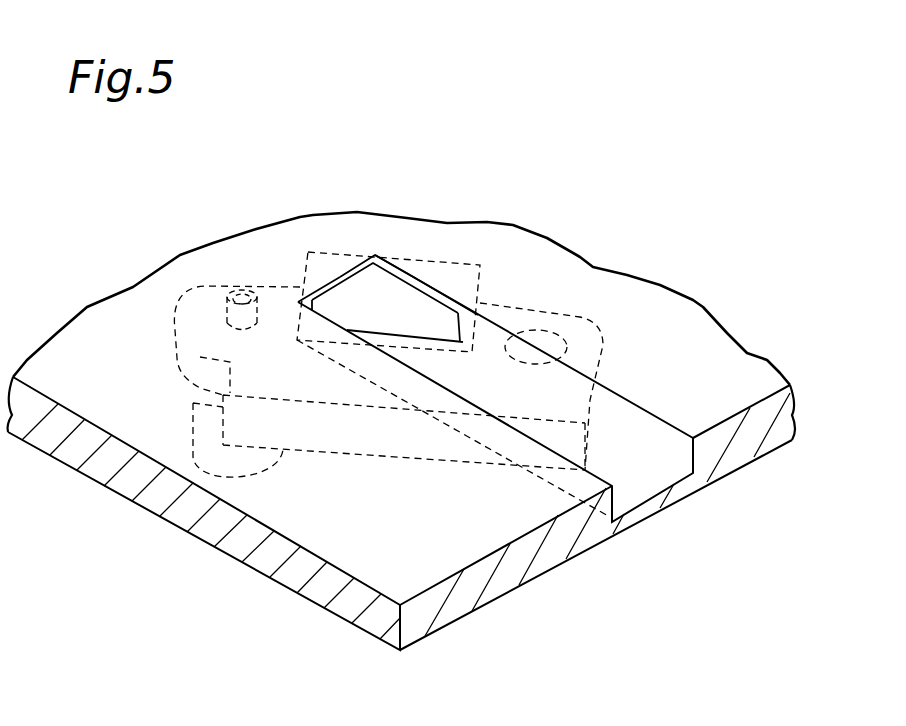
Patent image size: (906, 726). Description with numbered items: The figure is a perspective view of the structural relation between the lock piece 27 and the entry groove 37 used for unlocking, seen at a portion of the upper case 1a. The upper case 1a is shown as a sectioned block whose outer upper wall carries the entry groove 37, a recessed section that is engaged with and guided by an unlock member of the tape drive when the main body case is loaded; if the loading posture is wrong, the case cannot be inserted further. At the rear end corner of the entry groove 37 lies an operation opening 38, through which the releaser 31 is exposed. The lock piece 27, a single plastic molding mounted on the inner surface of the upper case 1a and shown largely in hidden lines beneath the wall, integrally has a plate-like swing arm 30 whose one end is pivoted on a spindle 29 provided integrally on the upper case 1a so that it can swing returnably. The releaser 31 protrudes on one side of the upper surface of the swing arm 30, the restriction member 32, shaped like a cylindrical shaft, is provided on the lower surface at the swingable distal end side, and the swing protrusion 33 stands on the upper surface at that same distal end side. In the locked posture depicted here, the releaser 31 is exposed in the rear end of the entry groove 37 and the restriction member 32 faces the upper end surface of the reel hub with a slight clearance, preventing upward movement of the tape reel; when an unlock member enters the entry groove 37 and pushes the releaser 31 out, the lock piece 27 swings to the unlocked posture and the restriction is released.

The upper case 1a is at (688, 327).
The lock piece 27 is at (413, 457).
The spindle 29 is at (547, 330).
The swing arm 30 is at (315, 402).
The releaser 31 is at (400, 290).
The restriction member 32 is at (195, 438).
The swing protrusion 33 is at (240, 282).
The entry groove 37 is at (627, 480).
The operation opening 38 is at (338, 288).